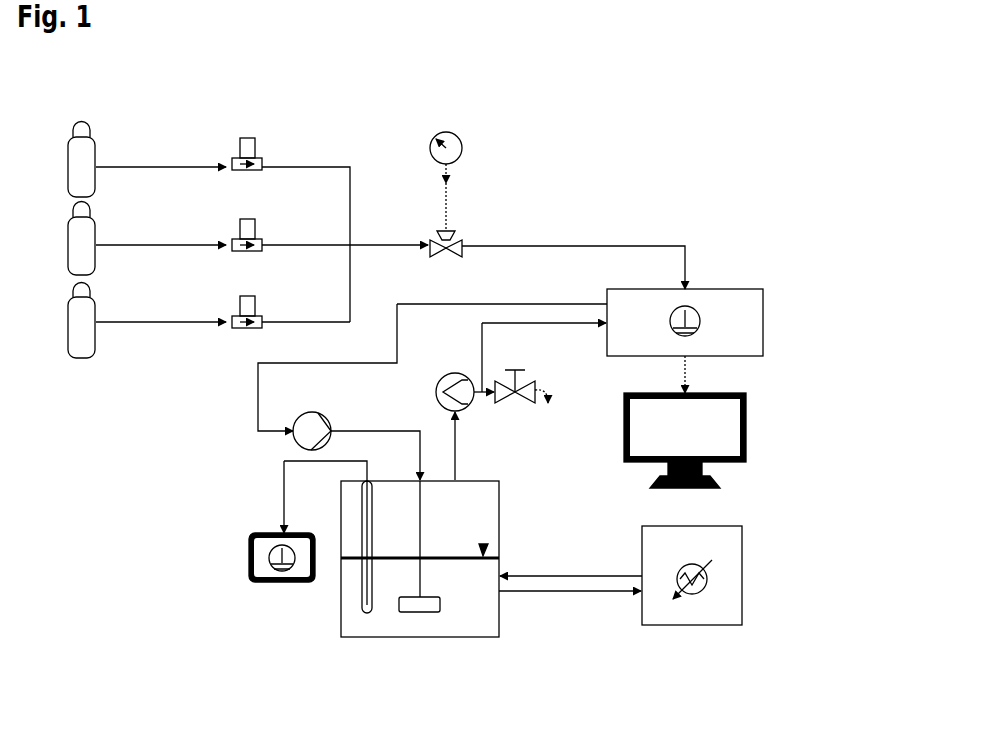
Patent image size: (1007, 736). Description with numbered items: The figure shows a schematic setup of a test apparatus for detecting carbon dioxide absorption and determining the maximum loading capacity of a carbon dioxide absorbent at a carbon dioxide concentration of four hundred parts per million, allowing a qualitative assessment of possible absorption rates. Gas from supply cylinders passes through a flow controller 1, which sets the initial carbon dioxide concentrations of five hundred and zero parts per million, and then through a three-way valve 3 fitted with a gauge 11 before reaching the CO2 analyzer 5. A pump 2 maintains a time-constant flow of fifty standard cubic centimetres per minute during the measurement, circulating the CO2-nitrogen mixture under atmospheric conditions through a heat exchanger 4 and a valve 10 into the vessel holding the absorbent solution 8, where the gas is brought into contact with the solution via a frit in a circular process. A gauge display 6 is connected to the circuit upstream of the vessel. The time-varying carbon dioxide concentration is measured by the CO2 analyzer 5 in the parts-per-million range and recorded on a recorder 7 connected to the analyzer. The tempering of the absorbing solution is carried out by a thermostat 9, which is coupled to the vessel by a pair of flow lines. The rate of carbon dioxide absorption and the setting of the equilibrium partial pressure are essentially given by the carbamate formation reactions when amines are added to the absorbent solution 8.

The flow controller 1 is at (264, 128).
The pump 2 is at (258, 447).
The three-way valve 3 is at (472, 217).
The heat exchanger 4 is at (425, 390).
The CO2 analyzer 5 is at (738, 273).
The pressure gauge display 6 is at (257, 597).
The recorder 7 is at (753, 417).
The absorbent solution 8 is at (373, 655).
The thermostat 9 is at (720, 582).
The relief valve 10 is at (543, 422).
The pressure gauge 11 is at (462, 130).